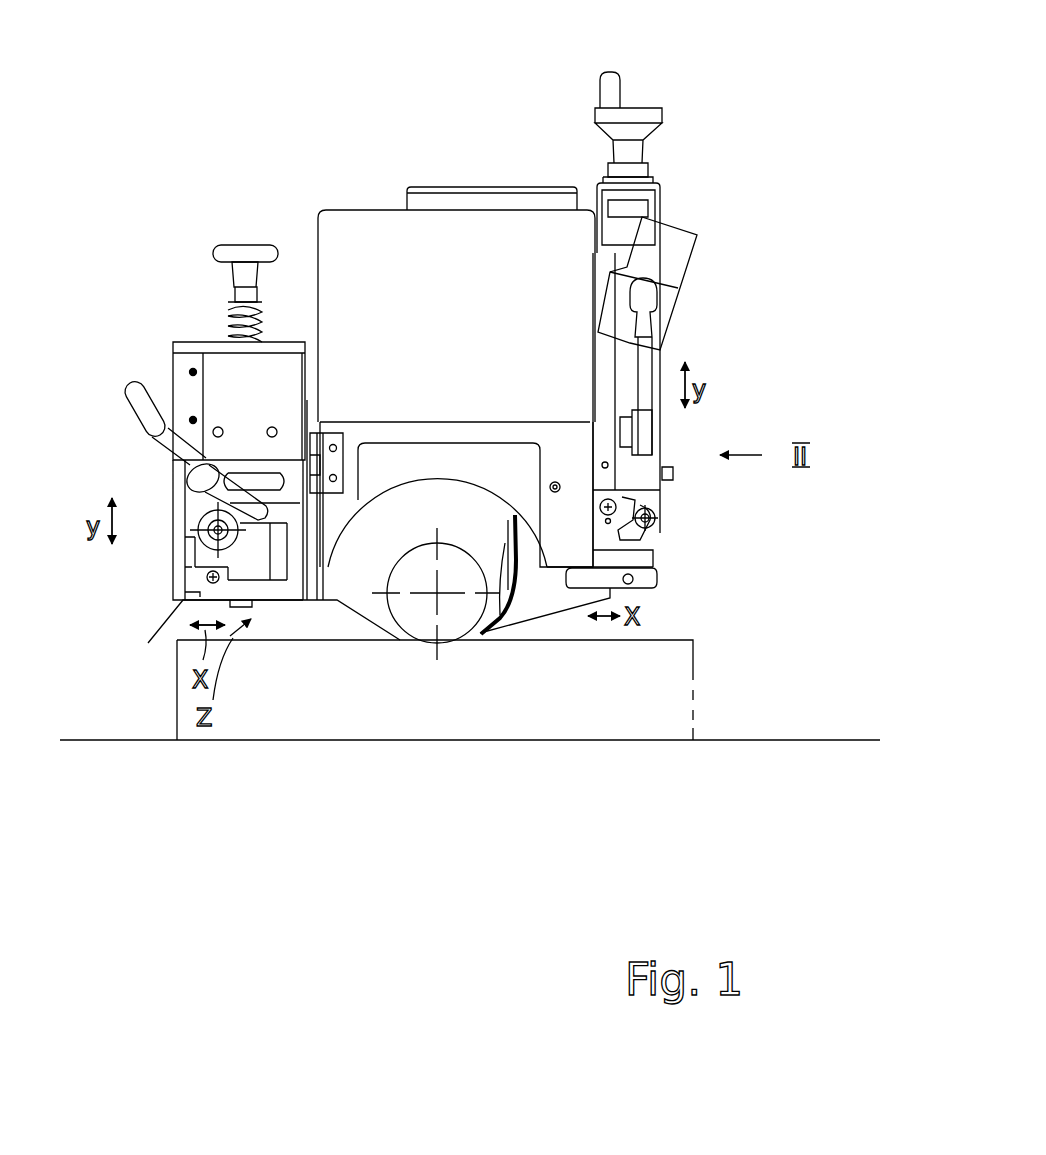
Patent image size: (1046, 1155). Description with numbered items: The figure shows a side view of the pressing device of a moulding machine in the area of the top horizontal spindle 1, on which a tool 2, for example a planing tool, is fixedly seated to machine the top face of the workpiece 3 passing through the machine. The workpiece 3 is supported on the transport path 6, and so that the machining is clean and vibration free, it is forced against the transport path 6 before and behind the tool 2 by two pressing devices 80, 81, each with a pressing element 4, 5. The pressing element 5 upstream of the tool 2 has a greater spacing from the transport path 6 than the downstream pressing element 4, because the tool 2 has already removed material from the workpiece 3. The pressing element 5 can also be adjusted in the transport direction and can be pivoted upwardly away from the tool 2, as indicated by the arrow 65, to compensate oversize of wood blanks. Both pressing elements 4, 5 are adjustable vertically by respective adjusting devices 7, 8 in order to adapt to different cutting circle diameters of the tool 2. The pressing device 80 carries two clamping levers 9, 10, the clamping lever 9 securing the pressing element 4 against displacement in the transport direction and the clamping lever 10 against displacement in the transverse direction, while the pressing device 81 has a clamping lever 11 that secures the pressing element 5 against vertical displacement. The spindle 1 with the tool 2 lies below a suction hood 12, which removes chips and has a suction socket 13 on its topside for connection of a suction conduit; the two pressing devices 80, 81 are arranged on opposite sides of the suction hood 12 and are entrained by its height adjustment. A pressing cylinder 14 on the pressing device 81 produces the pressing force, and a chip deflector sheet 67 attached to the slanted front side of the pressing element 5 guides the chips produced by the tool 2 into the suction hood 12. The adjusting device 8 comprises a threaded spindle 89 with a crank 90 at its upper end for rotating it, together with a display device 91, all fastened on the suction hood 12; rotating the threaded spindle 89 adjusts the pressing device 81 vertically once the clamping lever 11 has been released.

The top horizontal spindle 1 is at (438, 600).
The tool 2 is at (404, 632).
The workpiece 3 is at (570, 710).
The pressing element 4 is at (270, 623).
The pressing element 5 is at (540, 605).
The transport path 6 is at (720, 743).
The adjusting device 7 is at (236, 228).
The adjusting device 8 is at (661, 90).
The clamping lever 9 is at (137, 430).
The clamping lever 10 is at (183, 540).
The clamping lever 11 is at (642, 328).
The suction hood 12 is at (356, 235).
The suction socket 13 is at (446, 207).
The pressing cylinder 14 is at (668, 260).
The arrow 65 is at (514, 577).
The chip deflector sheet 67 is at (507, 543).
The pressing device 80 is at (183, 318).
The pressing device 81 is at (687, 210).
The threaded spindle 89 is at (638, 100).
The crank 90 is at (603, 117).
The display device 91 is at (618, 205).